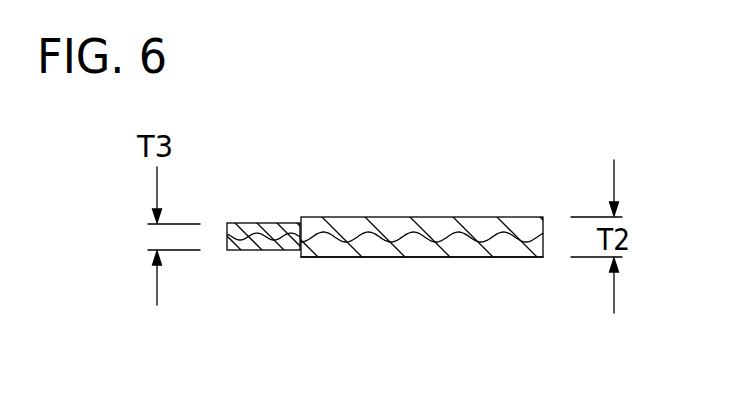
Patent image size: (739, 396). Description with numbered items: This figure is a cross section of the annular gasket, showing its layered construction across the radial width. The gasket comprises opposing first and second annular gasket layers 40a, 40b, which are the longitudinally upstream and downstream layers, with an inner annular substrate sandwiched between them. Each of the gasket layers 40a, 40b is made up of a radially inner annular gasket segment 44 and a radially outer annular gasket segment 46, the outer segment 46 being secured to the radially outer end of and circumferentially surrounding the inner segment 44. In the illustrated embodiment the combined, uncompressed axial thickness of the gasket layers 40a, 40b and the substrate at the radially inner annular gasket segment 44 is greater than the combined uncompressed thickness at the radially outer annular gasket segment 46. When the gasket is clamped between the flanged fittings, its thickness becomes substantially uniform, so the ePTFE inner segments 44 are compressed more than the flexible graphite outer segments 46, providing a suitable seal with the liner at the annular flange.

The first annular gasket layer 40a is at (440, 213).
The second annular gasket layer 40b is at (455, 262).
The radially inner annular gasket segment 44 is at (345, 225).
The radially outer annular gasket segment 46 is at (267, 228).